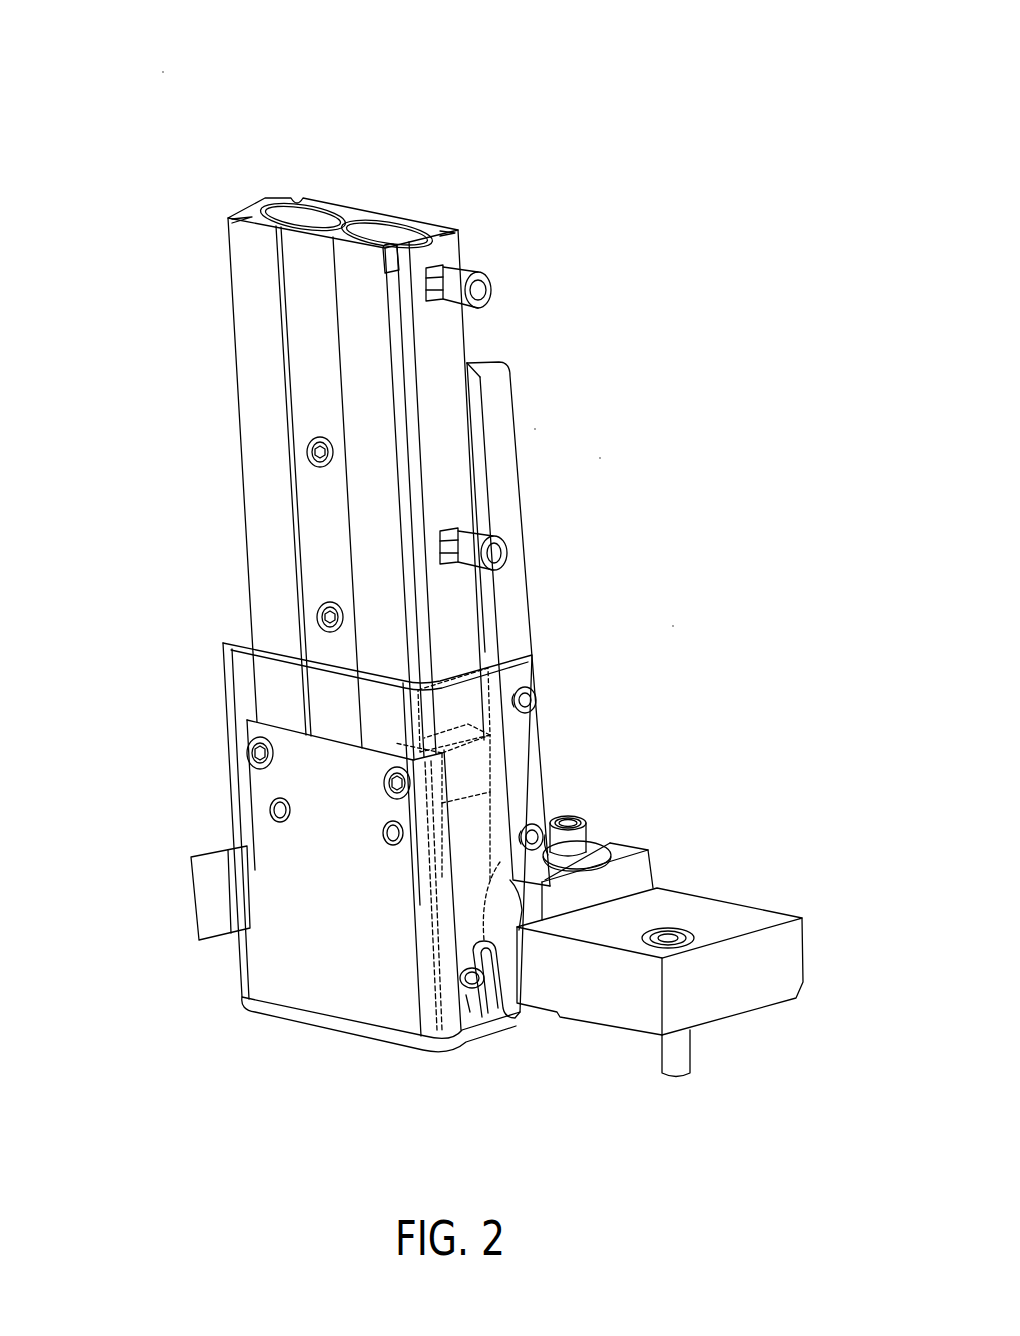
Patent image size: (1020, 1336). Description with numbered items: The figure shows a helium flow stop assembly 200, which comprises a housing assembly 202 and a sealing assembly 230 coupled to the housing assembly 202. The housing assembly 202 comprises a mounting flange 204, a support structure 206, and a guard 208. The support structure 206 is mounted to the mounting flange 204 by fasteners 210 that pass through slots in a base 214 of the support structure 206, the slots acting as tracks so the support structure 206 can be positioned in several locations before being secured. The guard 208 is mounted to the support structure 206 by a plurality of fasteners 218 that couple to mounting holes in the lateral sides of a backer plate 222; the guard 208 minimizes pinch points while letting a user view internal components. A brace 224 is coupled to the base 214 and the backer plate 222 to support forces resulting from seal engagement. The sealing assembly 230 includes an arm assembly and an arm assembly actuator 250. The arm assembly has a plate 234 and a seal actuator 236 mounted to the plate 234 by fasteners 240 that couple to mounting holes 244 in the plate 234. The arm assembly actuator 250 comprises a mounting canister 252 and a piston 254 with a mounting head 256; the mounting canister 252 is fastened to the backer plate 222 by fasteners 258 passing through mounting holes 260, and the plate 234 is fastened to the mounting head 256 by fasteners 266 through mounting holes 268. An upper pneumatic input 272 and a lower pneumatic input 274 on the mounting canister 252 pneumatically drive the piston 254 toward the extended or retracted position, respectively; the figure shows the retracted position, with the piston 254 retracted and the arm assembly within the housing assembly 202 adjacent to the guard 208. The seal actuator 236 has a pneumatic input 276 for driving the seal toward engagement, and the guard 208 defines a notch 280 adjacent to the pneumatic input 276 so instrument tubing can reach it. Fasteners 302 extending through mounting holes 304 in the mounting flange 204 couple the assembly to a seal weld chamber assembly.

The helium flow stop assembly 200 is at (150, 55).
The housing assembly 202 is at (688, 610).
The mounting flange 204 is at (737, 990).
The support structure 206 is at (548, 412).
The guard 208 is at (232, 646).
The fasteners 210 is at (582, 850).
The base 214 is at (640, 880).
The fasteners 218 is at (535, 695).
The backer plate 222 is at (510, 606).
The brace 224 is at (538, 822).
The sealing assembly 230 is at (615, 442).
The plate 234 is at (332, 928).
The seal actuator 236 is at (465, 885).
The fasteners 240 is at (278, 813).
The mounting holes 244 is at (273, 798).
The arm assembly actuator 250 is at (205, 175).
The mounting canister 252 is at (248, 306).
The piston 254 is at (308, 722).
The mounting head 256 is at (466, 757).
The fasteners 258 is at (316, 450).
The mounting holes 260 is at (324, 466).
The fasteners 266 is at (258, 753).
The mounting holes 268 is at (247, 738).
The upper pneumatic input 272 is at (486, 276).
The lower pneumatic input 274 is at (500, 546).
The pneumatic input 276 is at (467, 995).
The notch 280 is at (482, 986).
The fasteners 302 is at (683, 1052).
The mounting holes 304 is at (688, 936).